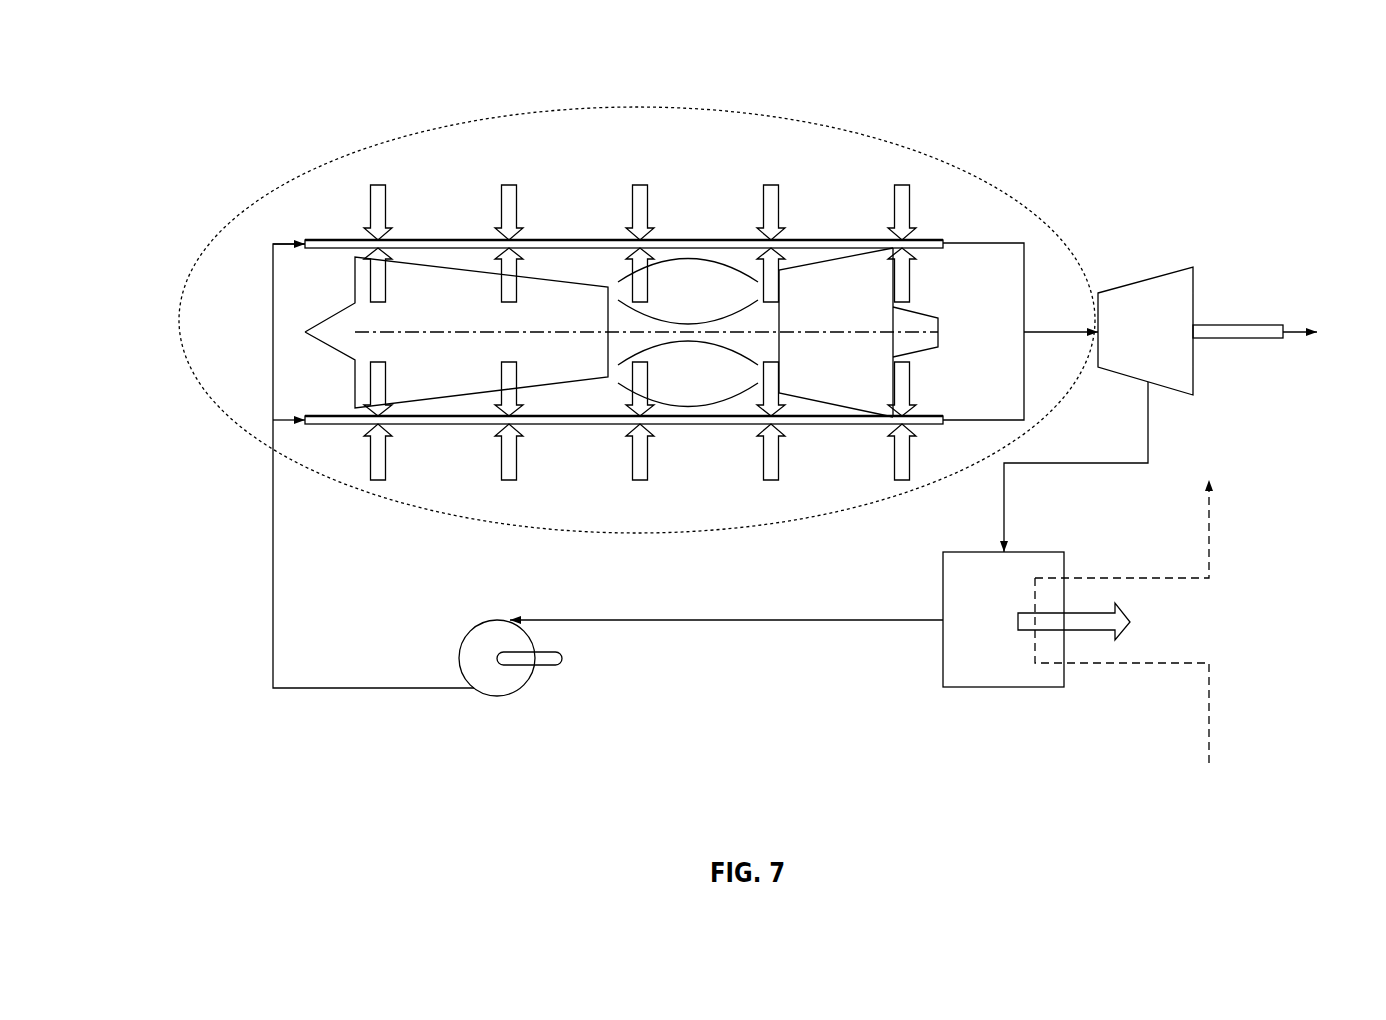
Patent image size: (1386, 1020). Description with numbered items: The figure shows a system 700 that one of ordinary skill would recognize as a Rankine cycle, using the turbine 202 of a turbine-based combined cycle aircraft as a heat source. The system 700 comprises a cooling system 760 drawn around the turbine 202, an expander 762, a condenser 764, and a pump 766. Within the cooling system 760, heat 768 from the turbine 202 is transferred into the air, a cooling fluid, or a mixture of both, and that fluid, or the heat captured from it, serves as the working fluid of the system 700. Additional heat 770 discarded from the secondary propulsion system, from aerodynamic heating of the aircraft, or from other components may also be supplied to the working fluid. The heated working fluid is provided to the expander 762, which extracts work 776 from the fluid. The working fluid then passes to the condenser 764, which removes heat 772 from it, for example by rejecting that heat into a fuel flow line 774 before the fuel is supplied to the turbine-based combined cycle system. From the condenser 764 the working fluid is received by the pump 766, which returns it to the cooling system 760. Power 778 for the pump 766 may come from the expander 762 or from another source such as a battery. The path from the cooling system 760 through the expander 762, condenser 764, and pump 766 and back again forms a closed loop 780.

The system 700 is at (130, 125).
The cooling system 760 is at (188, 378).
The turbine 202 is at (855, 312).
The expander 762 is at (1172, 334).
The condenser 764 is at (1002, 637).
The pump 766 is at (475, 667).
The heat 768 is at (902, 272).
The heat 770 is at (902, 210).
The heat 772 is at (1105, 621).
The fuel flow line 774 is at (1135, 639).
The work 776 is at (1279, 332).
The power 778 is at (565, 658).
The closed loop 780 is at (270, 636).